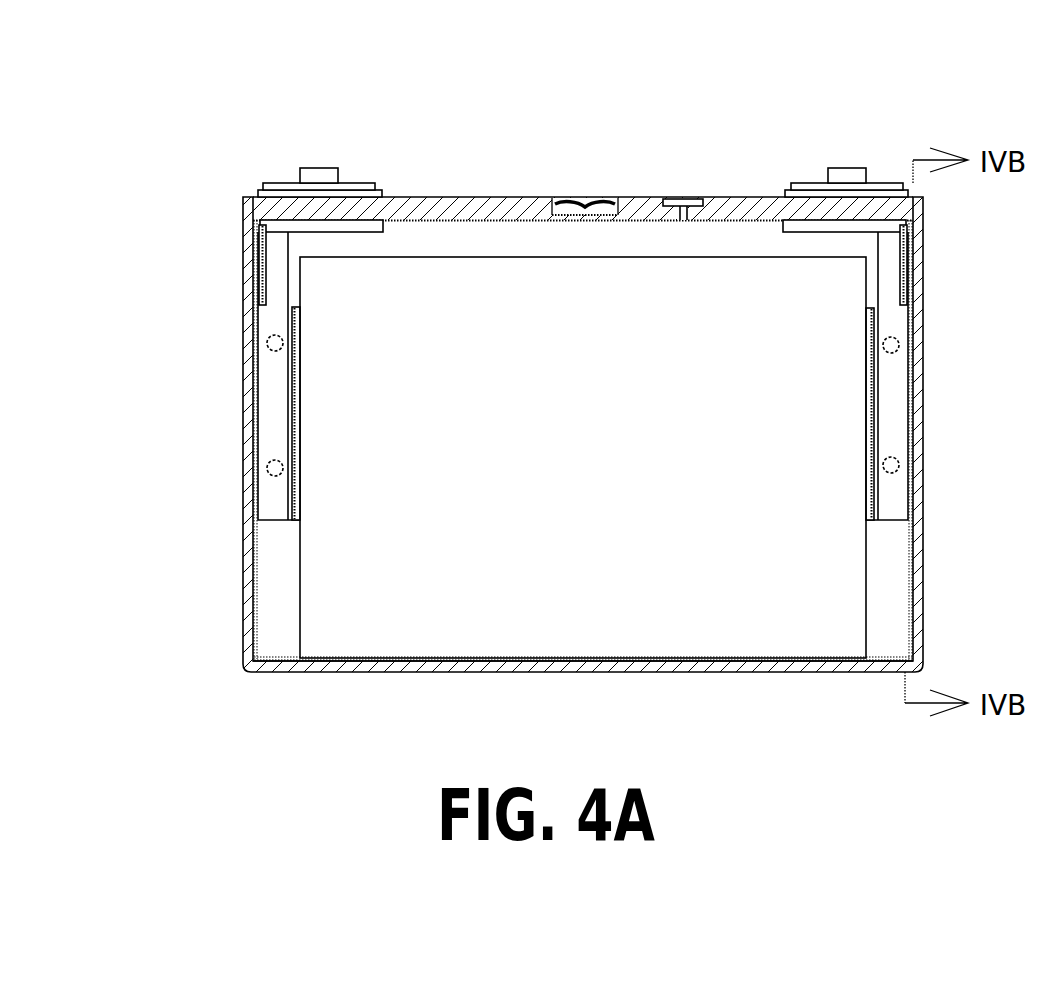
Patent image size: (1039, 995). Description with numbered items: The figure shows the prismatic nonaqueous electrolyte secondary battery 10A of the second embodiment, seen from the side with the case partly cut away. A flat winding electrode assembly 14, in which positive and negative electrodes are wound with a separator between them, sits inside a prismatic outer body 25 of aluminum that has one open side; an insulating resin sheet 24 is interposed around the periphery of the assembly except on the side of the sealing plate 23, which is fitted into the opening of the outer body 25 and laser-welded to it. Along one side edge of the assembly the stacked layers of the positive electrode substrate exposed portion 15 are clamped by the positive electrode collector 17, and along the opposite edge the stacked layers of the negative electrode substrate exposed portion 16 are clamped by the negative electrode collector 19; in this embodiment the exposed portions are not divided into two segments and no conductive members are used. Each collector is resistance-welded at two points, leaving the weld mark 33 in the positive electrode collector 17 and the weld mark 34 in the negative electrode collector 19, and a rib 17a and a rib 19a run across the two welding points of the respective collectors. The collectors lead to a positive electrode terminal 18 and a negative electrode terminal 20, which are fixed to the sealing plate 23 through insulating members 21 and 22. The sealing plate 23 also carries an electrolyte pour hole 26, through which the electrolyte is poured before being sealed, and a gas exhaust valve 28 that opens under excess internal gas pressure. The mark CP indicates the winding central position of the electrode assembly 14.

The prismatic nonaqueous electrolyte secondary battery 10A is at (200, 86).
The flat winding electrode assembly 14 is at (562, 597).
The positive electrode substrate exposed portion 15 is at (888, 600).
The negative electrode substrate exposed portion 16 is at (270, 587).
The positive electrode collector 17 is at (890, 387).
The rib 17a is at (872, 490).
The positive electrode terminal 18 is at (848, 178).
The negative electrode collector 19 is at (273, 407).
The rib 19a is at (293, 323).
The negative electrode terminal 20 is at (327, 178).
The insulating member 21 is at (786, 192).
The insulating member 22 is at (383, 192).
The sealing plate 23 is at (468, 197).
The insulating resin sheet 24 is at (258, 640).
The prismatic outer body 25 is at (722, 672).
The electrolyte pour hole 26 is at (680, 198).
The gas exhaust valve 28 is at (563, 198).
The weld mark 33 is at (895, 465).
The weld mark 34 is at (267, 343).
The winding central position CP is at (955, 458).